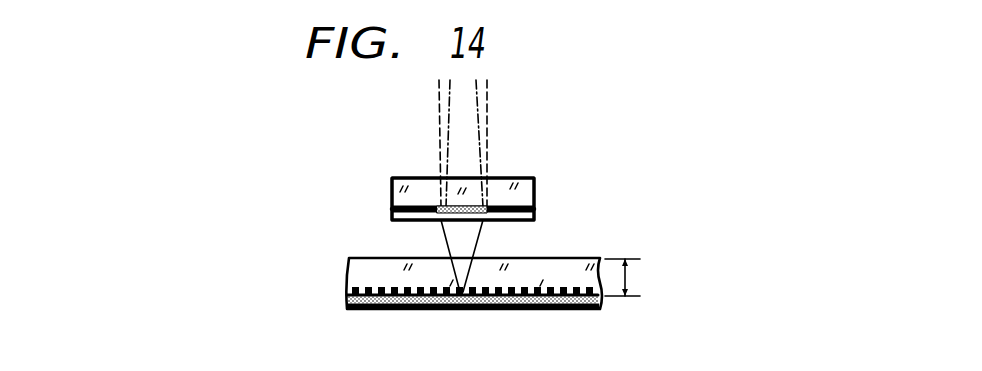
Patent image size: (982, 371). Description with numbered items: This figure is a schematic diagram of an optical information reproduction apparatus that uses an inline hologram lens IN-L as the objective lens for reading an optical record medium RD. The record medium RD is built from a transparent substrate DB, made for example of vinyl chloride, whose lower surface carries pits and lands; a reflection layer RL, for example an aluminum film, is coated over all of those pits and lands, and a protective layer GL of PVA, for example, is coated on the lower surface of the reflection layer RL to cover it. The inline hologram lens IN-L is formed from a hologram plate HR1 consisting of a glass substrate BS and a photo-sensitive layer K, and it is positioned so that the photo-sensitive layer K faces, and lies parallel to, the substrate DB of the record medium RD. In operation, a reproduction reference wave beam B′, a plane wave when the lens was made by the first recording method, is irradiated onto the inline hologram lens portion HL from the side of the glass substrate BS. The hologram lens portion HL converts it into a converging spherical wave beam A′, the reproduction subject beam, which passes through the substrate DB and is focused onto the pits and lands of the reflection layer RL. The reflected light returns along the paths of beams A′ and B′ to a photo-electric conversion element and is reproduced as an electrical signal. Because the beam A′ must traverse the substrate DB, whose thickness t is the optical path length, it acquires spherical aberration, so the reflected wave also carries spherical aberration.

The plane wave reproduction reference wave beam B′ is at (437, 125).
The hologram recording plate HR1 is at (475, 191).
The glass substrate BS is at (535, 187).
The photo-sensitive layer K is at (535, 211).
The inline hologram lens IN-L is at (392, 202).
The converging spherical wave beam A′ is at (440, 242).
The inline hologram lens portion HL is at (466, 221).
The optical record medium RD is at (398, 294).
The transparent substrate DB is at (364, 270).
The reflection layer RL is at (350, 288).
The protective layer GL is at (437, 322).
The thickness t is at (627, 278).